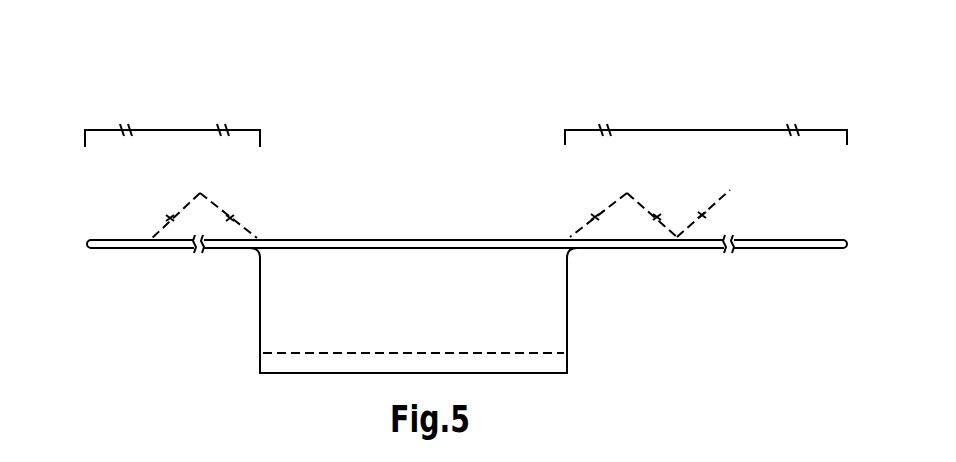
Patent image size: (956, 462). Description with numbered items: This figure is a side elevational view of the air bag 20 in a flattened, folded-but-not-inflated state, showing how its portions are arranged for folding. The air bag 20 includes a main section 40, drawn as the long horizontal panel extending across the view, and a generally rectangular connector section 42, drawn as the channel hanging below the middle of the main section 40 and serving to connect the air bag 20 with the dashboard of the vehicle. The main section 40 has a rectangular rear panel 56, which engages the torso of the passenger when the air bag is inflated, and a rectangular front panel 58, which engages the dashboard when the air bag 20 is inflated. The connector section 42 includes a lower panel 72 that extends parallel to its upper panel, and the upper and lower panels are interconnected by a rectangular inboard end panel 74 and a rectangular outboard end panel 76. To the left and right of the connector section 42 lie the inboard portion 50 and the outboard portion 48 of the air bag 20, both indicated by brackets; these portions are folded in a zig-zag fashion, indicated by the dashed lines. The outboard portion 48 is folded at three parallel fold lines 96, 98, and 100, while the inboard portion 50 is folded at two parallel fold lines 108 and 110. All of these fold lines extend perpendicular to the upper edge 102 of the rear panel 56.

The air bag 20 is at (478, 132).
The main section 40 is at (387, 234).
The connector section 42 is at (253, 372).
The outboard portion 48 is at (708, 130).
The inboard portion 50 is at (170, 130).
The rear panel 56 is at (347, 240).
The front panel 58 is at (357, 250).
The lower panel 72 is at (545, 303).
The inboard end panel 74 is at (260, 318).
The outboard end panel 76 is at (567, 327).
The fold line 96 is at (677, 237).
The fold line 98 is at (627, 193).
The fold line 100 is at (570, 238).
The upper edge 102 is at (503, 240).
The fold line 108 is at (200, 193).
The fold line 110 is at (268, 237).